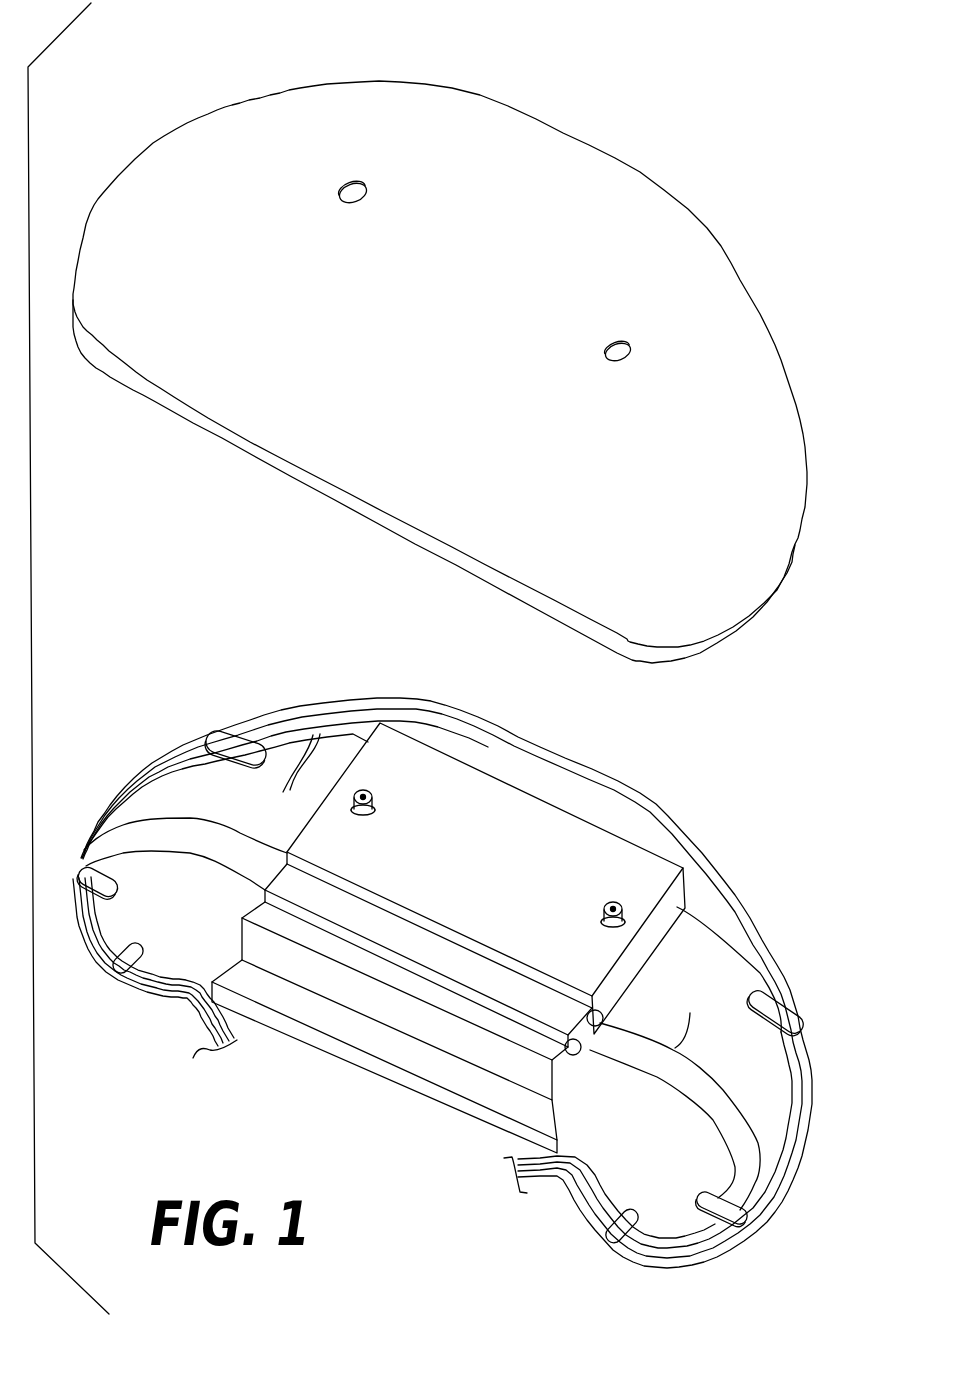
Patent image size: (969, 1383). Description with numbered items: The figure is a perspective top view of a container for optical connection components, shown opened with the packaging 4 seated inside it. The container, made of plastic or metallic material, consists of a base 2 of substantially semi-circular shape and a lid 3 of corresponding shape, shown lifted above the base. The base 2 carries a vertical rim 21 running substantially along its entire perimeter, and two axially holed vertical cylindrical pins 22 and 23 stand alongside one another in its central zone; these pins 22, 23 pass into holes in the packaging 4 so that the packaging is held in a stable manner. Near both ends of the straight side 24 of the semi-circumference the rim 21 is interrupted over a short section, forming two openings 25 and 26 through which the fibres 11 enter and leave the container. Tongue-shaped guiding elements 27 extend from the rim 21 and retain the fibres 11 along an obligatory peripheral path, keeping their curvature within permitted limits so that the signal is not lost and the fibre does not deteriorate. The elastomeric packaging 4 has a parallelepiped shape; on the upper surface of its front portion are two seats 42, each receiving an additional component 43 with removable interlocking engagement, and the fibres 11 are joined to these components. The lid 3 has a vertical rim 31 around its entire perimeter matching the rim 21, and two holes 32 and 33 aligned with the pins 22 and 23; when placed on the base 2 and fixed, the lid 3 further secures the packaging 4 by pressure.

The base 2 is at (375, 683).
The lid 3 is at (440, 335).
The packaging 4 is at (500, 780).
The fibres 11 is at (230, 870).
The vertical rim 21 is at (578, 768).
The vertical cylindrical pin 22 is at (373, 797).
The vertical cylindrical pin 23 is at (603, 905).
The straight side 24 is at (362, 1054).
The opening 25 is at (208, 1005).
The opening 26 is at (560, 1153).
The guiding elements 27 is at (777, 1003).
The vertical rim 31 is at (277, 466).
The hole 32 is at (367, 197).
The hole 33 is at (607, 365).
The seat 42 is at (435, 968).
The additional component 43 is at (592, 1030).